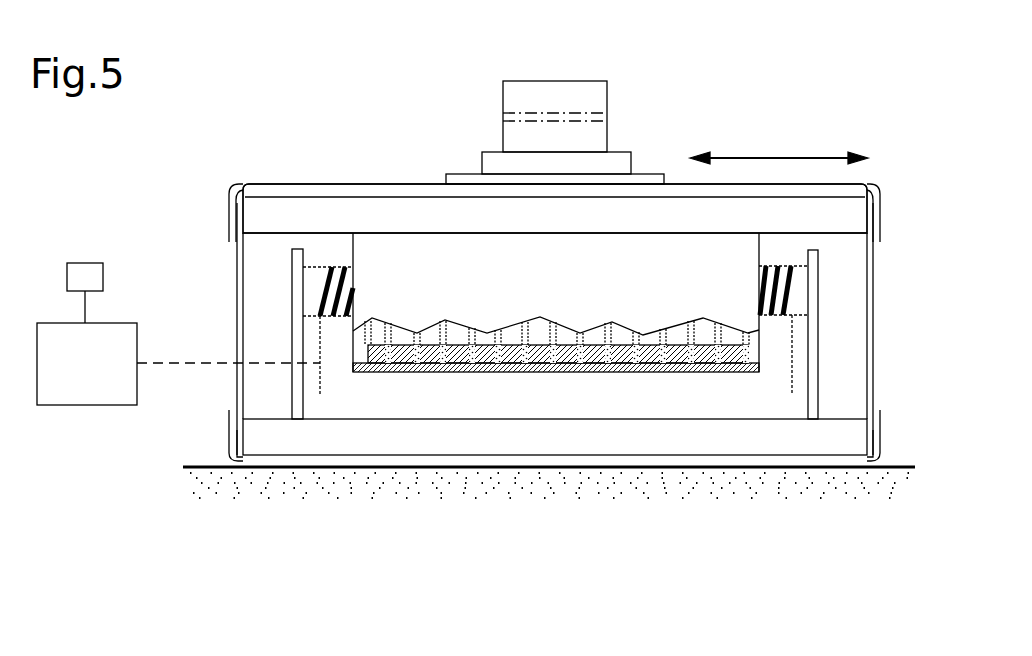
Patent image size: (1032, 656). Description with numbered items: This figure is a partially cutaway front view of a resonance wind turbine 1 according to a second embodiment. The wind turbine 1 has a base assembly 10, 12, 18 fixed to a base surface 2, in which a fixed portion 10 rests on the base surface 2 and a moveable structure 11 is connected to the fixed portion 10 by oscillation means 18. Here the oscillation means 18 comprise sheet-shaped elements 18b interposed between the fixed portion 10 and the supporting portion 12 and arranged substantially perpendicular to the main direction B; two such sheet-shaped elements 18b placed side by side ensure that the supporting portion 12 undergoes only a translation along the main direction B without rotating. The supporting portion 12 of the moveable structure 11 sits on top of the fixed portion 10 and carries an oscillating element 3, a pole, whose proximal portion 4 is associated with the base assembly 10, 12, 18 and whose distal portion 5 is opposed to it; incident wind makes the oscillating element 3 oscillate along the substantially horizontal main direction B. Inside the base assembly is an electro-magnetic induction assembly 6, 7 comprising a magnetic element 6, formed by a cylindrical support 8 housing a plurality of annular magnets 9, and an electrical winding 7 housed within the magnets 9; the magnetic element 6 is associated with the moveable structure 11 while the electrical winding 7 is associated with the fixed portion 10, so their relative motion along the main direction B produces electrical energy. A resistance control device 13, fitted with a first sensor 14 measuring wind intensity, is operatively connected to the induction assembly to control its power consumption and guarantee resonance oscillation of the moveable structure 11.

The resonance wind turbine 1 is at (838, 58).
The base surface 2 is at (210, 467).
The oscillating element 3 is at (490, 107).
The proximal portion 4 is at (600, 128).
The distal portion 5 is at (553, 93).
The magnetic element 6 is at (728, 275).
The electrical winding 7 is at (795, 295).
The cylindrical support 8 is at (752, 347).
The magnets 9 is at (447, 340).
The fixed portion 10 is at (541, 450).
The moveable structure 11 is at (375, 184).
The supporting portion 12 is at (555, 208).
The resistance control device 13 is at (73, 378).
The first sensor 14 is at (97, 262).
The oscillation means 18 is at (235, 270).
The sheet-shaped element 18b is at (873, 368).
The main direction B is at (781, 158).